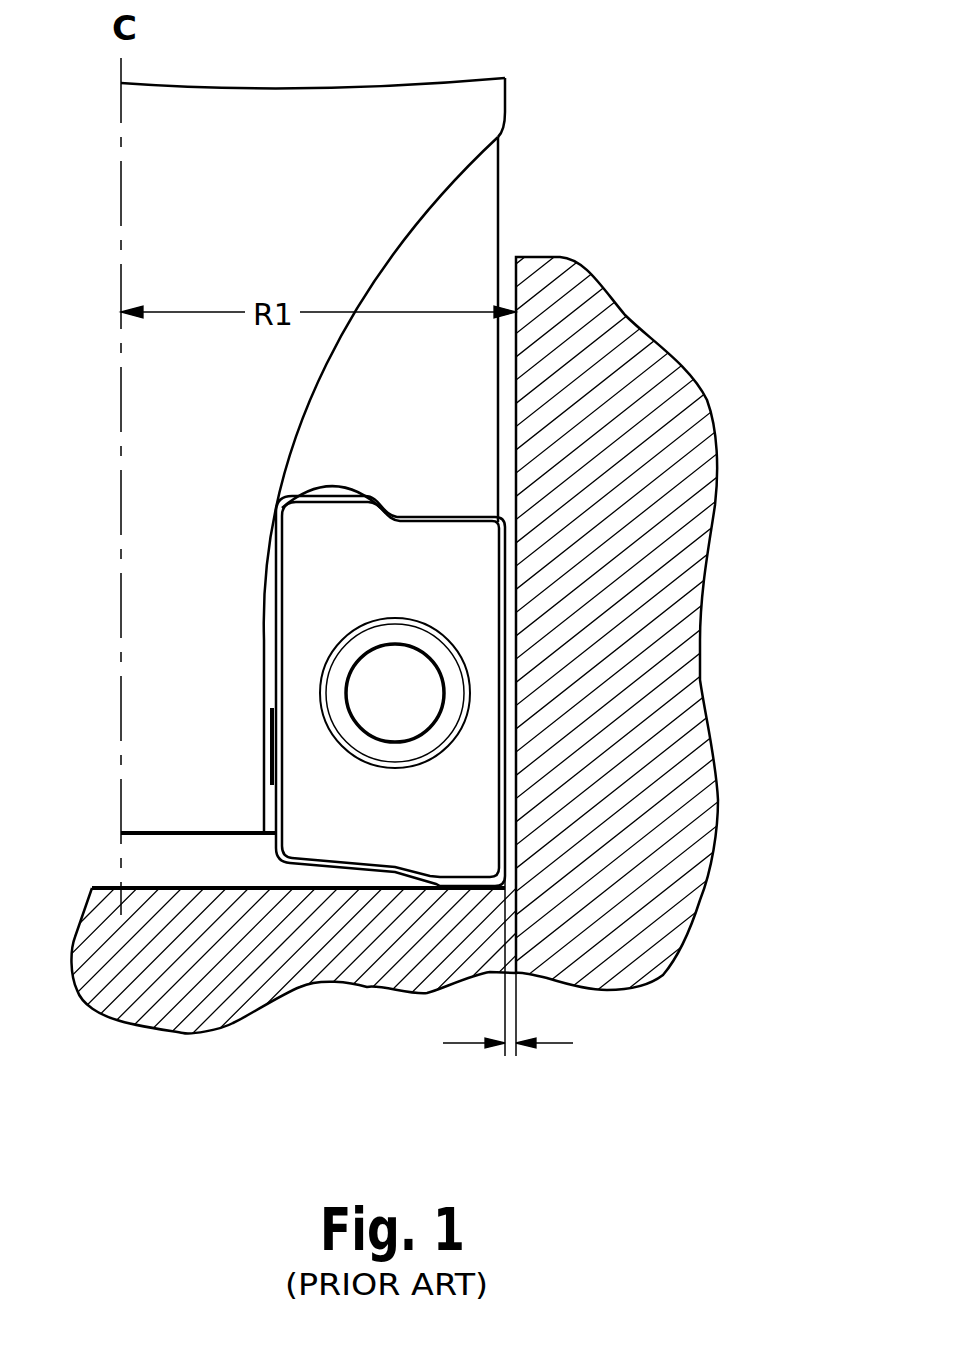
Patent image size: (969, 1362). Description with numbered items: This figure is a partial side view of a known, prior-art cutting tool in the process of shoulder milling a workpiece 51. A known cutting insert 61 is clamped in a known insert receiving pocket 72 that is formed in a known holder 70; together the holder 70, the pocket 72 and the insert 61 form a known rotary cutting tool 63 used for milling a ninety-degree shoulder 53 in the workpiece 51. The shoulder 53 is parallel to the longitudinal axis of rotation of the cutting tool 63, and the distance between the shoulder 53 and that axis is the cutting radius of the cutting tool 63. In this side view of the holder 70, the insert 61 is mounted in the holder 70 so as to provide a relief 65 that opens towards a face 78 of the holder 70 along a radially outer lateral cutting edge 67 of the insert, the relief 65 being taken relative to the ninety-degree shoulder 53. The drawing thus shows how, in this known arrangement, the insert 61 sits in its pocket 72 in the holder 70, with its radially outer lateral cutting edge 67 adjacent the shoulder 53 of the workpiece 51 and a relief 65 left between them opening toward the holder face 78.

The workpiece 51 is at (263, 972).
The 90° shoulder 53 is at (518, 417).
The cutting insert 61 is at (330, 785).
The rotary cutting tool 63 is at (525, 106).
The relief 65 is at (505, 1050).
The radially outer lateral cutting edge 67 is at (508, 818).
The holder 70 is at (166, 566).
The insert receiving pocket 72 is at (333, 490).
The face 78 is at (190, 833).